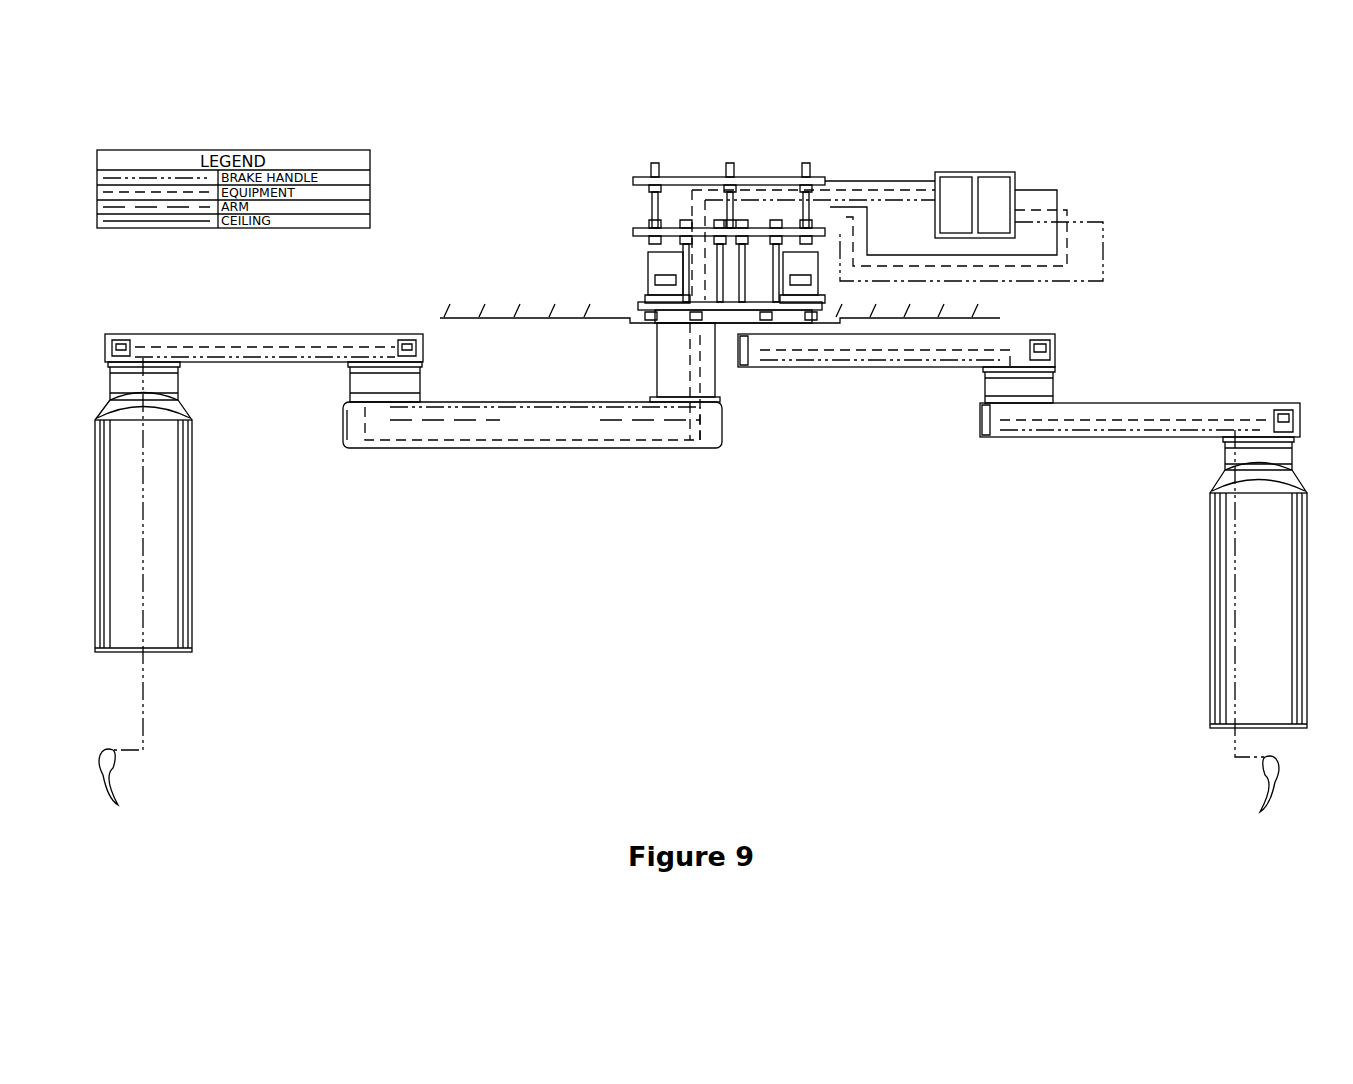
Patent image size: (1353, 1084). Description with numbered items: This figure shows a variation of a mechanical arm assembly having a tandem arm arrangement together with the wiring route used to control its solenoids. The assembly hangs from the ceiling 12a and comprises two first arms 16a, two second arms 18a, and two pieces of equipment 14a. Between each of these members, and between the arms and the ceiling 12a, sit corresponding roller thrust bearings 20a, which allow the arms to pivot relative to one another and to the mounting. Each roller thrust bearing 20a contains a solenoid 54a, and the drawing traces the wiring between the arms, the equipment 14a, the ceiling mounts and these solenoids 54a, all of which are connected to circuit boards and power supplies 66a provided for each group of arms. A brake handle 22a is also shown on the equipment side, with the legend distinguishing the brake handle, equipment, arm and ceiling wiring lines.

The ceiling 12a is at (580, 321).
The equipment 14a is at (184, 497).
The first arm 16a is at (866, 370).
The second arm 18a is at (183, 343).
The roller thrust bearing 20a is at (348, 378).
The brake handle 22a is at (113, 748).
The solenoid 54a is at (407, 340).
The circuit boards and power supplies 66a is at (1004, 172).